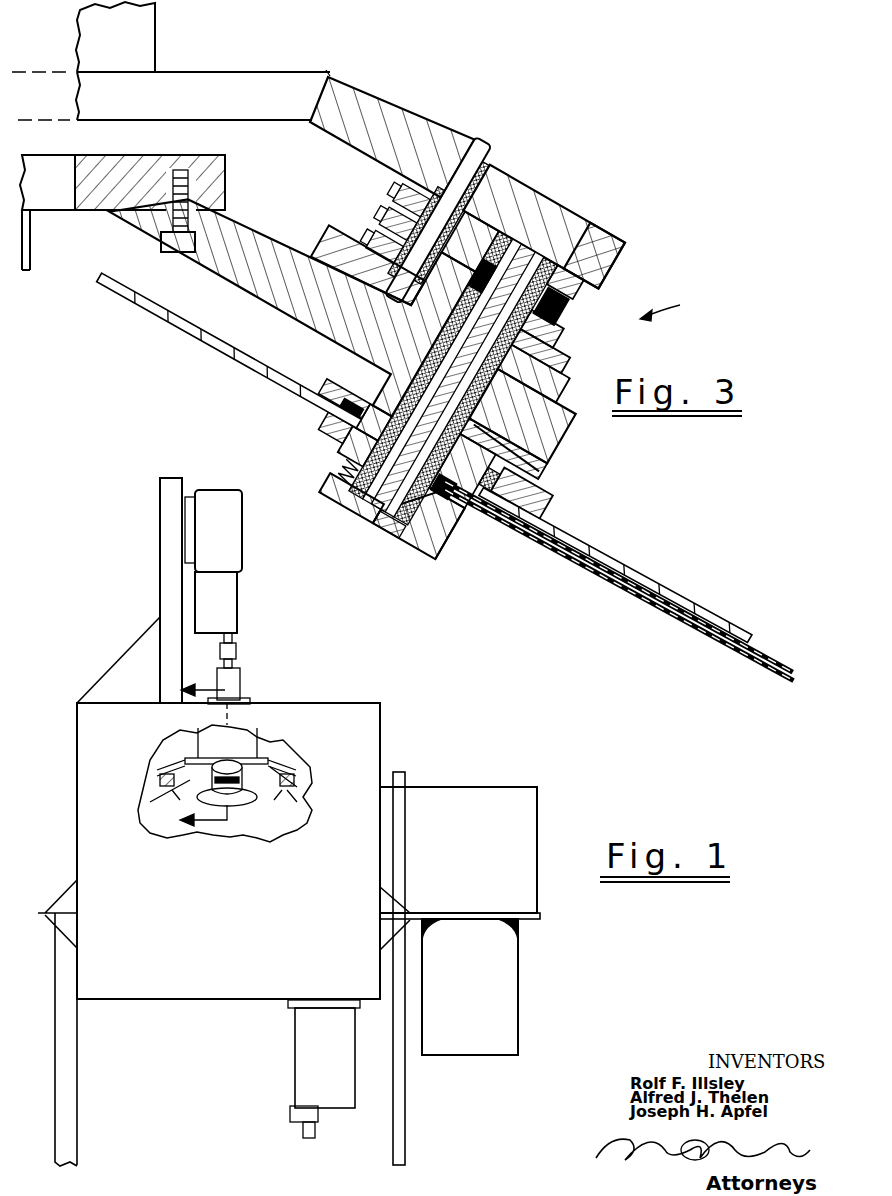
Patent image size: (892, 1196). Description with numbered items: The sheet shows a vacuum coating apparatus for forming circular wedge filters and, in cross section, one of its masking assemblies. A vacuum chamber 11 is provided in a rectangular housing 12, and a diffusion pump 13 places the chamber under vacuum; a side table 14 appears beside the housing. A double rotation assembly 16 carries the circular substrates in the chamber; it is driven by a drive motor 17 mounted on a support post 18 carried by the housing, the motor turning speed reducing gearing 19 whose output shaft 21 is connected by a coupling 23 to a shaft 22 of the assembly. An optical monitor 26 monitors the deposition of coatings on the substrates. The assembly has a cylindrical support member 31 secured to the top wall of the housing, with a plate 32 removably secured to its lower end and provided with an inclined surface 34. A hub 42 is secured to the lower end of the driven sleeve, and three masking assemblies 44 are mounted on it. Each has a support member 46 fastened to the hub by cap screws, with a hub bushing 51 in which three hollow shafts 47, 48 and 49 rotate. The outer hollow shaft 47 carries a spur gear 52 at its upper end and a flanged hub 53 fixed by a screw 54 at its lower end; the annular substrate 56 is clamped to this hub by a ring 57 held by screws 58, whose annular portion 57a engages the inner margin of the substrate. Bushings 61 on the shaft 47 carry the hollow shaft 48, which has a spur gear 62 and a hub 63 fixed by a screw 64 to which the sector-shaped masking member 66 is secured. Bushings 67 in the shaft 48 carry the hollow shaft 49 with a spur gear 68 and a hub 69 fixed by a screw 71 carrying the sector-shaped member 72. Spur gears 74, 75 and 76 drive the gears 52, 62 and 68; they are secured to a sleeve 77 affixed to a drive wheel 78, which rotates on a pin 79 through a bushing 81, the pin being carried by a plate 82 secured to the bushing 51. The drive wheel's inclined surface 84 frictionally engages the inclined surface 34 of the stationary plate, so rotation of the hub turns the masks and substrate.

In FIG. 1, the vacuum chamber 11 is at (276, 834).
In FIG. 1, the rectangular housing 12 is at (380, 738).
In FIG. 1, the diffusion pump 13 is at (403, 1108).
In FIG. 1, the side table 14 is at (490, 790).
In FIG. 1, the double rotation assembly 16 is at (273, 750).
In FIG. 1, the drive motor 17 is at (240, 530).
In FIG. 1, the support post 18 is at (160, 533).
In FIG. 1, the speed reducing gearing 19 is at (228, 594).
In FIG. 1, the output shaft 21 is at (232, 640).
In FIG. 1, the shaft 22 is at (234, 664).
In FIG. 1, the coupling 23 is at (238, 652).
In FIG. 1, the optical monitor 26 is at (300, 1065).
In FIG. 3, the cylindrical support member 31 is at (152, 40).
In FIG. 3, the plate 32 is at (268, 75).
In FIG. 3, the inclined surface 34 is at (326, 78).
In FIG. 3, the hub 42 is at (222, 177).
In FIG. 3, the masking assembly 44 is at (674, 307).
In FIG. 3, the support member 46 is at (265, 246).
In FIG. 3, the hollow shaft 47 is at (176, 252).
In FIG. 3, the hollow shaft 48 is at (452, 515).
In FIG. 3, the hollow shaft 49 is at (396, 526).
In FIG. 3, the hub bushing 51 is at (552, 445).
In FIG. 3, the spur gear 52 is at (576, 359).
In FIG. 3, the flanged hub 53 is at (545, 511).
In FIG. 3, the screw 54 is at (395, 396).
In FIG. 3, the annular substrate 56 is at (200, 336).
In FIG. 3, the ring 57 is at (305, 406).
In FIG. 3, the annular portion 57a is at (286, 396).
In FIG. 3, the screws 58 is at (324, 426).
In FIG. 3, the bushings 61 is at (566, 305).
In FIG. 3, the spur gear 62 is at (570, 331).
In FIG. 3, the hub 63 is at (434, 553).
In FIG. 3, the screw 64 is at (365, 456).
In FIG. 3, the sector-shaped masking member 66 is at (780, 681).
In FIG. 3, the bushings 67 is at (580, 252).
In FIG. 3, the spur gear 68 is at (540, 232).
In FIG. 3, the hub 69 is at (352, 520).
In FIG. 3, the screw 71 is at (336, 484).
In FIG. 3, the sector-shaped member 72 is at (762, 684).
In FIG. 3, the spur gear 74 is at (388, 249).
In FIG. 3, the spur gear 75 is at (393, 222).
In FIG. 3, the spur gear 76 is at (395, 190).
In FIG. 3, the sleeve 77 is at (500, 172).
In FIG. 3, the drive wheel 78 is at (405, 130).
In FIG. 3, the pin 79 is at (481, 143).
In FIG. 3, the bushing 81 is at (492, 172).
In FIG. 3, the plate 82 is at (566, 396).
In FIG. 3, the inclined surface 84 is at (608, 262).